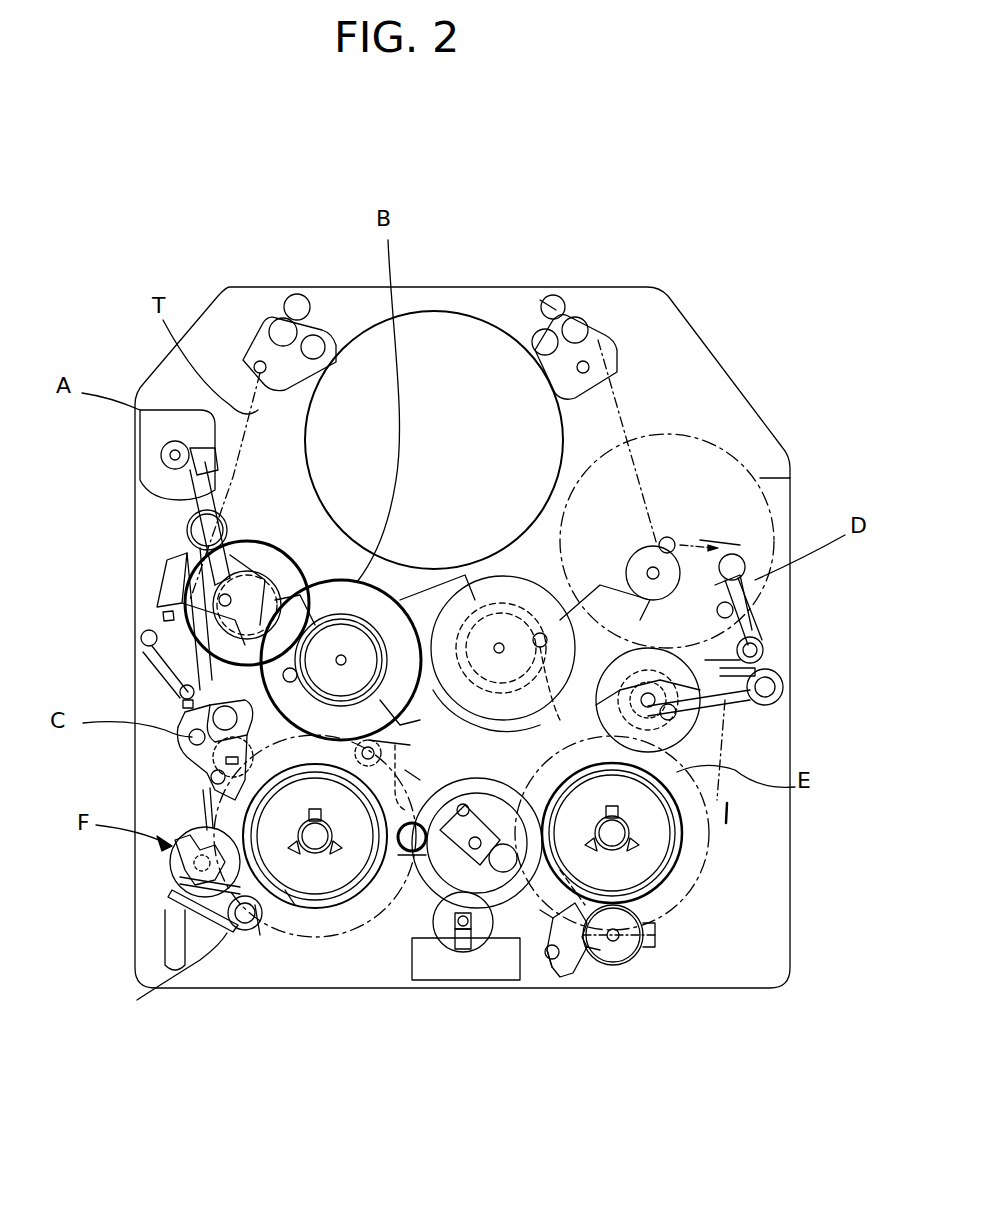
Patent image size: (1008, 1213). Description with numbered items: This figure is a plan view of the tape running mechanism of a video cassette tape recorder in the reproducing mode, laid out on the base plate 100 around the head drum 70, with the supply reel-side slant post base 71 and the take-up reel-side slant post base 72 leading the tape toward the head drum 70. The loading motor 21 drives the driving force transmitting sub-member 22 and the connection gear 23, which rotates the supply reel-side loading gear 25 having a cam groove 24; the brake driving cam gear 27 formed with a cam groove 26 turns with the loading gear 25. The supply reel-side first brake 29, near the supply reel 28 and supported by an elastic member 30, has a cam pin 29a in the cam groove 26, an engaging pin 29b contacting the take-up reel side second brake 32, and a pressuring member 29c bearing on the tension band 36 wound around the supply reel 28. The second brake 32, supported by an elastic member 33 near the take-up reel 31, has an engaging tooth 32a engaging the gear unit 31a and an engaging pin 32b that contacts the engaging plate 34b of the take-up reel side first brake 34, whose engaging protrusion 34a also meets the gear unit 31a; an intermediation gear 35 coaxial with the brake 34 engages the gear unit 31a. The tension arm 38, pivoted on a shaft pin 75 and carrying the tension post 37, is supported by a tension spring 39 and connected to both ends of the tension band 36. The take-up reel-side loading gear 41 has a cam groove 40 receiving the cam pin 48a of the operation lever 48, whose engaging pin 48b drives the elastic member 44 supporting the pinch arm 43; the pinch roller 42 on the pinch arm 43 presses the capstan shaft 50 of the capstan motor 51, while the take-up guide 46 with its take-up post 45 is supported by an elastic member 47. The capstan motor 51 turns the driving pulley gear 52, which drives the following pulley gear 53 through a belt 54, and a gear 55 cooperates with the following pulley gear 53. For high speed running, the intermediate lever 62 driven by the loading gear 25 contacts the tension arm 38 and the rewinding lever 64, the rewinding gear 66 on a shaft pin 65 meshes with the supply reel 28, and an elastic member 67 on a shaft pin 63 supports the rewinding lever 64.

The base plate 100 is at (740, 415).
The head drum 70 is at (434, 322).
The supply reel-side slant post base 71 is at (270, 335).
The take-up reel-side slant post base 72 is at (562, 302).
The loading motor 21 is at (152, 447).
The driving force transmitting sub-member 22 is at (185, 540).
The tension post 37 is at (193, 582).
The connection gear 23 is at (185, 605).
The tension arm 38 is at (177, 618).
The tension spring 39 is at (147, 658).
The intermediate lever 62 is at (197, 715).
The shaft pin 75 is at (203, 738).
The shaft pin 65 is at (198, 860).
The rewinding gear 66 is at (177, 852).
The elastic member 67 is at (228, 912).
The shaft pin 63 is at (162, 971).
The rewinding lever 64 is at (247, 950).
The tension band 36 is at (290, 890).
The supply reel 28 is at (300, 905).
The supply reel-side first brake 29 is at (360, 880).
The cam pin 29a is at (410, 748).
The engaging pin 29b is at (405, 770).
The pressuring member 29c is at (345, 880).
The elastic member 30 is at (392, 905).
The gear 55 is at (417, 878).
The following pulley gear 53 is at (484, 960).
The elastic member 33 is at (505, 960).
The take-up reel side second brake 32 is at (533, 975).
The engaging tooth 32a is at (503, 843).
The engaging pin 32b is at (557, 965).
The take-up reel side first brake 34 is at (657, 947).
The engaging protrusion 34a is at (612, 965).
The engaging plate 34b is at (568, 950).
The intermediation gear 35 is at (650, 960).
The take-up reel 31 is at (663, 847).
The gear unit 31a is at (677, 870).
The belt 54 is at (720, 800).
The operation lever 48 is at (612, 690).
The cam pin 48a is at (542, 635).
The engaging pin 48b is at (677, 737).
The driving pulley gear 52 is at (740, 710).
The elastic member 44 is at (783, 694).
The take-up guide 46 is at (757, 620).
The elastic member 47 is at (760, 650).
The take-up post 45 is at (735, 553).
The pinch roller 42 is at (637, 550).
The pinch arm 43 is at (600, 603).
The capstan shaft 50 is at (675, 555).
The capstan motor 51 is at (780, 520).
The cam groove 40 is at (512, 590).
The take-up reel-side loading gear 41 is at (463, 567).
The cam groove 24 is at (312, 577).
The supply reel-side loading gear 25 is at (350, 603).
The cam groove 26 is at (397, 607).
The brake driving cam gear 27 is at (422, 603).